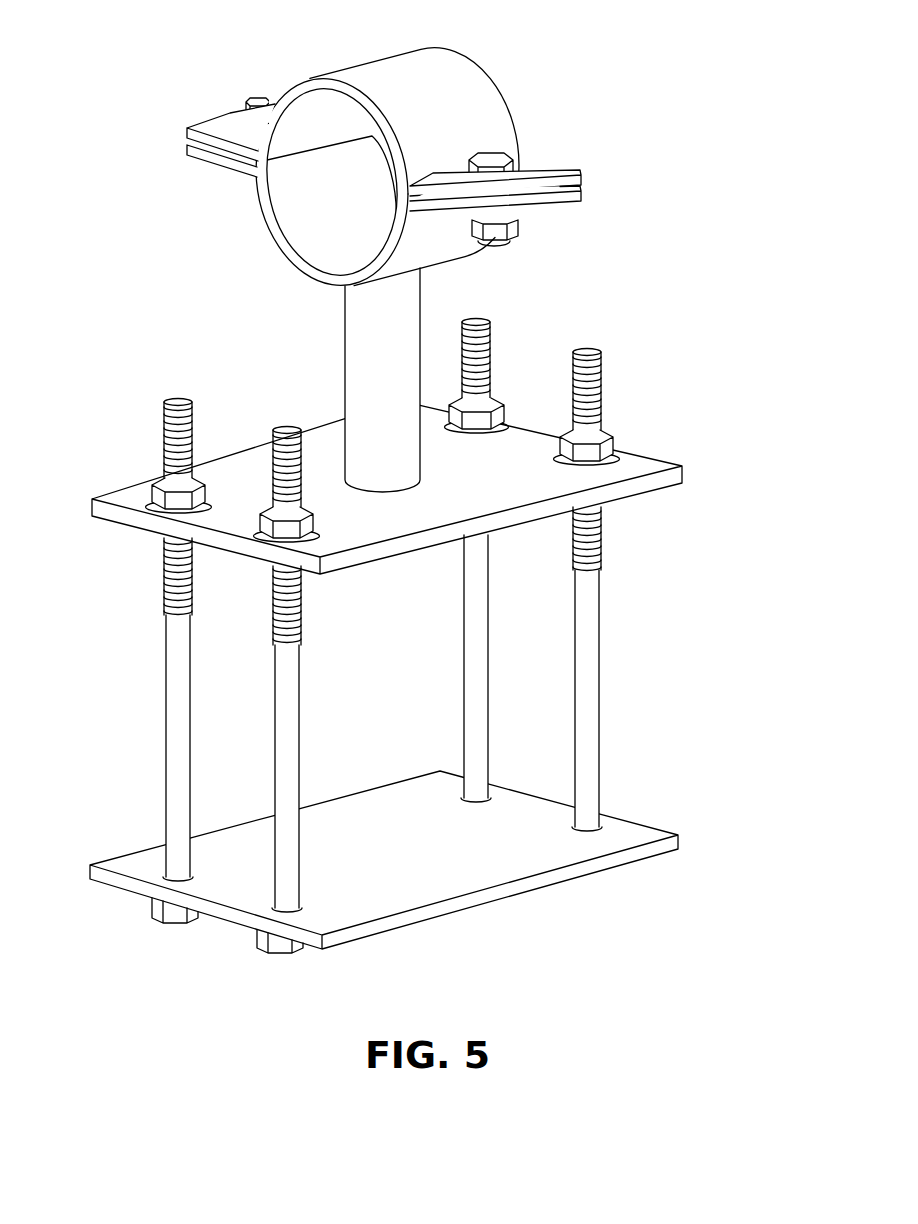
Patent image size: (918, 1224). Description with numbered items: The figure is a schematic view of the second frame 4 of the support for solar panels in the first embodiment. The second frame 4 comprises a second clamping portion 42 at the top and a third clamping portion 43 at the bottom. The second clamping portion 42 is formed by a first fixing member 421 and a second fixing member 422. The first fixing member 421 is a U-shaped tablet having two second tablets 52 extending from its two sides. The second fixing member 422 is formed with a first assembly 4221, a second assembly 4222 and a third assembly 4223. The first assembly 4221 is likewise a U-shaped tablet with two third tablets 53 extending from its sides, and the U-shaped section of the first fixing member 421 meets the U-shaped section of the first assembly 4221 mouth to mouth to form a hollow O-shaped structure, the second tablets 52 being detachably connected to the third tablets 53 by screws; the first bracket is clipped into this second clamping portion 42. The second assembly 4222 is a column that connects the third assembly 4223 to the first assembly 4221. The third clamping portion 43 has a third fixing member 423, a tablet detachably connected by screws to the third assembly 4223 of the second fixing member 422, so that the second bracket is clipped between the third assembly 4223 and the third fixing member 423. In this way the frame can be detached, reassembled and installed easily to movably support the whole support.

The second frame 4 is at (699, 329).
The second clamping portion 42 is at (505, 92).
The first fixing member 421 is at (442, 82).
The second fixing member 422 is at (160, 272).
The first assembly 4221 is at (278, 237).
The second assembly 4222 is at (346, 352).
The third assembly 4223 is at (325, 442).
The third fixing member 423 is at (458, 872).
The third clamping portion 43 is at (607, 660).
The second tablets 52 is at (226, 124).
The third tablets 53 is at (210, 163).